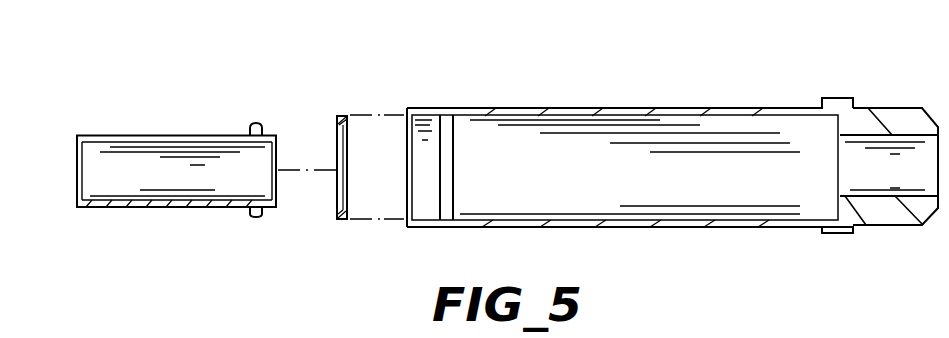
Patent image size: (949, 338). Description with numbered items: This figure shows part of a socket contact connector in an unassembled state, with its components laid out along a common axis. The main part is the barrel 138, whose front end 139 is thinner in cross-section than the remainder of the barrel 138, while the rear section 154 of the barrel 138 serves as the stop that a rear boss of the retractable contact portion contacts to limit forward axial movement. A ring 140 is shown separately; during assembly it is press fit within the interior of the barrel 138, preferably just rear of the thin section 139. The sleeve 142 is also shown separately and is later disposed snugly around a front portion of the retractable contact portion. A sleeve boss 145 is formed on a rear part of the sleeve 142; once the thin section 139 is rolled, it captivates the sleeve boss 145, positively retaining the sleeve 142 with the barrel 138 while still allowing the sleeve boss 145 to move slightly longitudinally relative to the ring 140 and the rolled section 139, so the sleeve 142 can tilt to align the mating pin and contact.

The sleeve 142 is at (168, 138).
The sleeve boss 145 is at (256, 124).
The ring 140 is at (348, 117).
The front end 139 is at (428, 113).
The barrel 138 is at (627, 109).
The rear section 154 is at (882, 115).